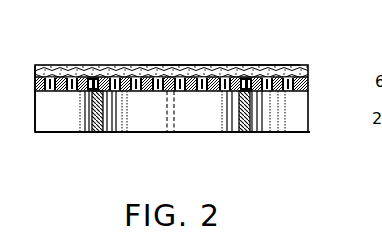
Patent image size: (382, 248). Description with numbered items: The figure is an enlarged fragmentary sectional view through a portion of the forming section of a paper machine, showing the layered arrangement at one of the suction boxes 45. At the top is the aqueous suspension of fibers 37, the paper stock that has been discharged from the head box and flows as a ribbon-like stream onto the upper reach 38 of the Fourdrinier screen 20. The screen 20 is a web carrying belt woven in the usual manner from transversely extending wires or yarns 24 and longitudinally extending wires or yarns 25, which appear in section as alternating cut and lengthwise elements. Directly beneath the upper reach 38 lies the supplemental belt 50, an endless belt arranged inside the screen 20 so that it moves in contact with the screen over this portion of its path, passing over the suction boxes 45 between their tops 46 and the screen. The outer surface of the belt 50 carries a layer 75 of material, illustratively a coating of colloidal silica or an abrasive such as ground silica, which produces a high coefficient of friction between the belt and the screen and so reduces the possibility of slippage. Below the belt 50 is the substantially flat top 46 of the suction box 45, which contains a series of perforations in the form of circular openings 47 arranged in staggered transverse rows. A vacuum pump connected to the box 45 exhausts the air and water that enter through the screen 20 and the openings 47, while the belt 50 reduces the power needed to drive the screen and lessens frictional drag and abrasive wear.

The Fourdrinier screen 20 is at (303, 66).
The upper reach 38 is at (58, 68).
The aqueous suspension of fibers 37 is at (182, 67).
The longitudinally extending wires or yarns 25 is at (262, 74).
The transversely extending wires or yarns 24 is at (233, 74).
The layer 75 is at (102, 77).
The flat tops 46 is at (88, 92).
The circular openings 47 is at (127, 131).
The suction boxes 45 is at (197, 133).
The supplemental belt 50 is at (34, 88).